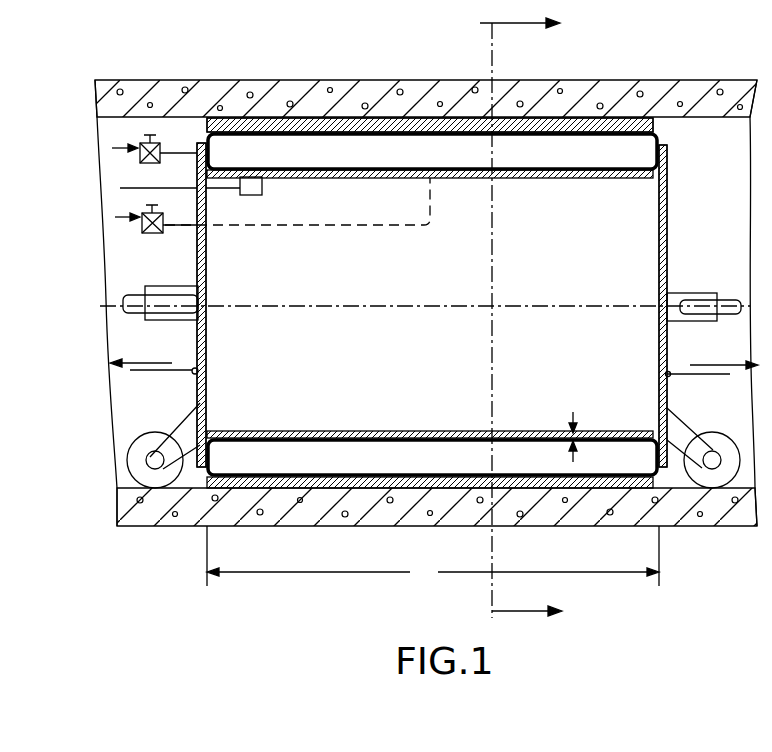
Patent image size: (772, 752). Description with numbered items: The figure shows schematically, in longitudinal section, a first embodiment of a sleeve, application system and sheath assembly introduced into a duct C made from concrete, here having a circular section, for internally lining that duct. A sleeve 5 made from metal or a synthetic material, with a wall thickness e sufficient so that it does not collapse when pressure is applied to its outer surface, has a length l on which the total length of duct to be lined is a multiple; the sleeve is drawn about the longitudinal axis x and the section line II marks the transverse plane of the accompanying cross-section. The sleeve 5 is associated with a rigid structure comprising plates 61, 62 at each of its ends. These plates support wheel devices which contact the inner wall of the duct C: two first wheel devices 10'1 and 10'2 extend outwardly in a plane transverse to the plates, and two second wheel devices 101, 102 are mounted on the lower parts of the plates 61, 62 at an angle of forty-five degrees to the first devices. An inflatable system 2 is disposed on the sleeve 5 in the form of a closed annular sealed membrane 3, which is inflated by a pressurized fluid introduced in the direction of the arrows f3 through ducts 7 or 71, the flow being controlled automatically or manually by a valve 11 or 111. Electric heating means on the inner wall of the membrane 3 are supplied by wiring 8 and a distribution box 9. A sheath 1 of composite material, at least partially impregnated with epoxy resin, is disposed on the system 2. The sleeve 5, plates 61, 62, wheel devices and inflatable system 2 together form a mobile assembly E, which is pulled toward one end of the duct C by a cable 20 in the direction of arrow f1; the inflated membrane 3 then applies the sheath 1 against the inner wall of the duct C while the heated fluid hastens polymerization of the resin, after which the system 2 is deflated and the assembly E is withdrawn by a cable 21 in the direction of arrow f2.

The lining sheath 1 is at (310, 125).
The inflatable system 2 is at (350, 140).
The annular sealed membrane 3 is at (403, 127).
The sleeve 5 is at (556, 180).
The end plate 61 is at (207, 256).
The end plate 62 is at (656, 240).
The fluid duct 7 is at (184, 151).
The fluid duct 71 is at (190, 226).
The wiring 8 is at (190, 188).
The distribution box 9 is at (262, 188).
The first wheel device 10'1 is at (155, 279).
The first wheel device 10'2 is at (709, 283).
The second wheel device 101 is at (157, 424).
The second wheel device 102 is at (703, 424).
The valve 11 is at (157, 141).
The valve 111 is at (165, 220).
The cable 20 is at (710, 375).
The cable 21 is at (186, 370).
The duct C is at (637, 98).
The mobile assembly E is at (676, 196).
The wall thickness e is at (572, 425).
The sleeve length l is at (433, 557).
The axis x is at (424, 308).
The pulling direction arrow f1 is at (724, 349).
The withdrawal direction arrow f2 is at (141, 345).
The fluid inlet arrow f3 is at (104, 172).
The section line II is at (528, 320).